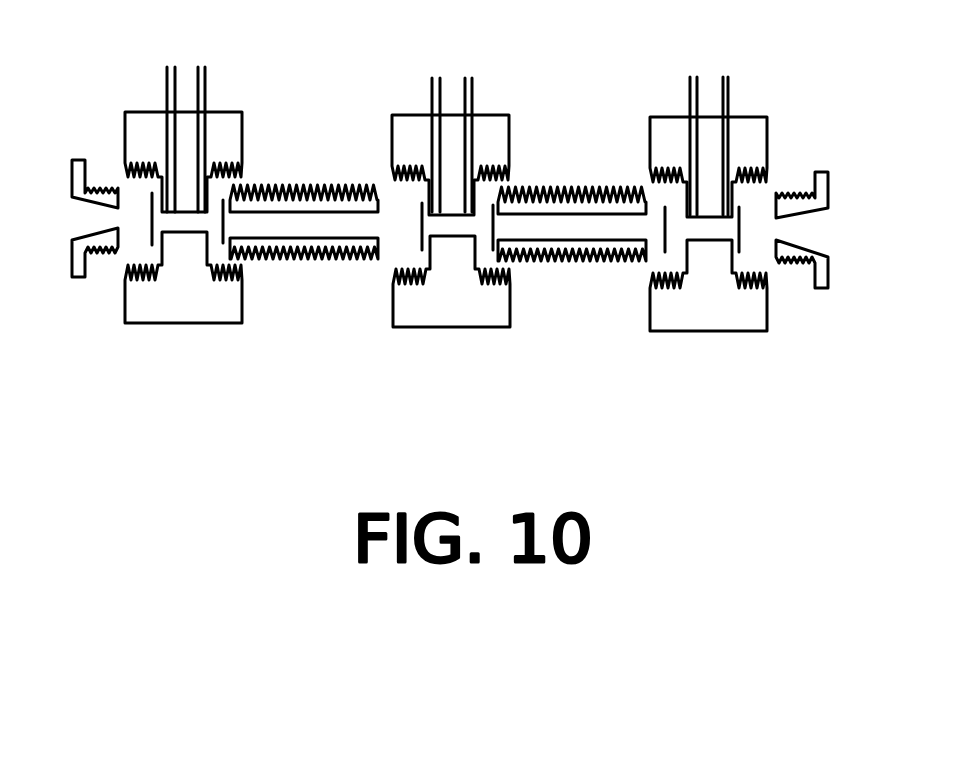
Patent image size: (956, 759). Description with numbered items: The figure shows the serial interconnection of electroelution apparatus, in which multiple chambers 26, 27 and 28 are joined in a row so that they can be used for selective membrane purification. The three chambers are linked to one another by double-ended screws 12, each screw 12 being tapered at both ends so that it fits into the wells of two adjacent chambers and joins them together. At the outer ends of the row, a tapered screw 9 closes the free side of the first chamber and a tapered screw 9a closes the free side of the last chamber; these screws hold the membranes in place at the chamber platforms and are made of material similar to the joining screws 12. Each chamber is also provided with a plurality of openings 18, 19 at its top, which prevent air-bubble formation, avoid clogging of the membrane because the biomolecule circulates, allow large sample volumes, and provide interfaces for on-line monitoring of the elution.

The tapered screw 9 is at (77, 277).
The tapered screw 9a is at (822, 288).
The screw 12 is at (317, 258).
The opening 18 is at (167, 82).
The opening 19 is at (205, 85).
The chamber 26 is at (190, 323).
The chamber 27 is at (452, 327).
The chamber 28 is at (690, 332).